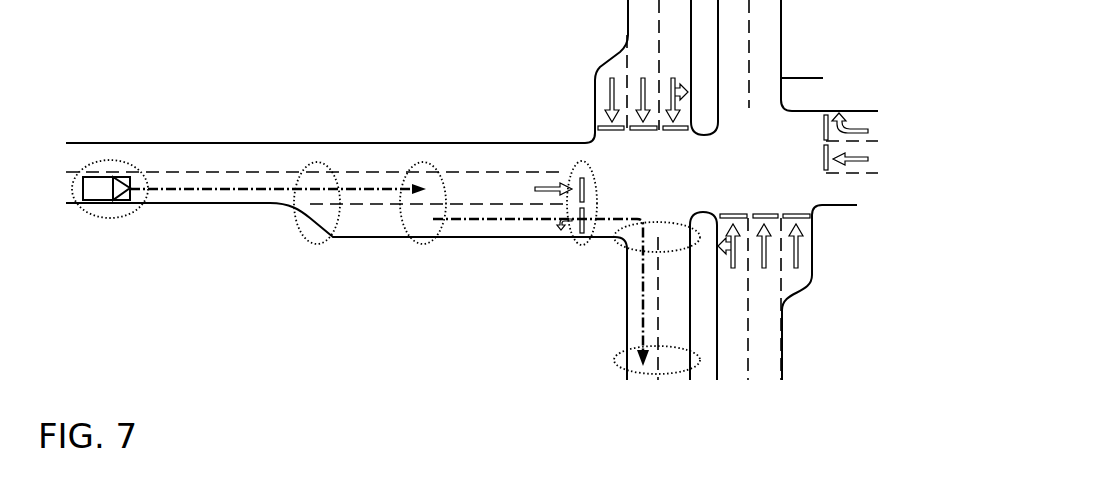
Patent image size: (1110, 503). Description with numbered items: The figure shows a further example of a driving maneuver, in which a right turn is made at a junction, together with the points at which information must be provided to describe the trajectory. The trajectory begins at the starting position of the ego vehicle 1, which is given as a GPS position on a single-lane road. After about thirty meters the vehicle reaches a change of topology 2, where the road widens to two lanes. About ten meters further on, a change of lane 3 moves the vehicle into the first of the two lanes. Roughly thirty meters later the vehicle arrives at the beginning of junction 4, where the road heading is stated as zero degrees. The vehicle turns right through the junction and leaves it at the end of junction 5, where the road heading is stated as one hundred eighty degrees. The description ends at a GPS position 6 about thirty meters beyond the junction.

The starting position of the ego vehicle 1 is at (110, 217).
The change of topology 2 is at (317, 245).
The change of lane 3 is at (423, 245).
The beginning of junction 4 is at (582, 246).
The end of junction 5 is at (618, 246).
The GPS position 6 is at (615, 362).